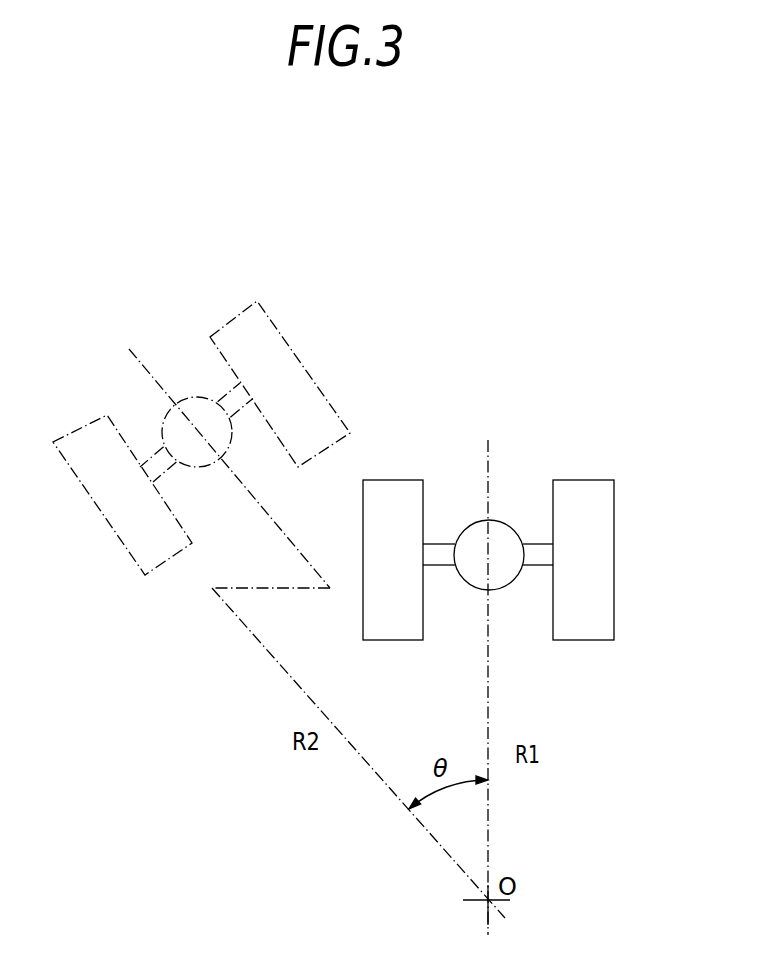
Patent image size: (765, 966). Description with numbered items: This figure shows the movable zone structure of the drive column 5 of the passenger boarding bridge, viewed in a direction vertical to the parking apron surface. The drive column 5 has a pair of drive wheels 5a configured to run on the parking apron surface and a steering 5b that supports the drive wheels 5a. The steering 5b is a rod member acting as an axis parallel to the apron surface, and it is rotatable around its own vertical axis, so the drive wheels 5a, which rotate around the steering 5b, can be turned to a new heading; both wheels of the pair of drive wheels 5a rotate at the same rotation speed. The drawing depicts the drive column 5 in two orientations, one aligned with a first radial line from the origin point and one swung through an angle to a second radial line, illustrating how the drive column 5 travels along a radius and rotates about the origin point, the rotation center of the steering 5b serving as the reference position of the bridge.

The drive column 5 is at (498, 528).
The drive wheels 5a is at (398, 500).
The steering 5b is at (530, 548).